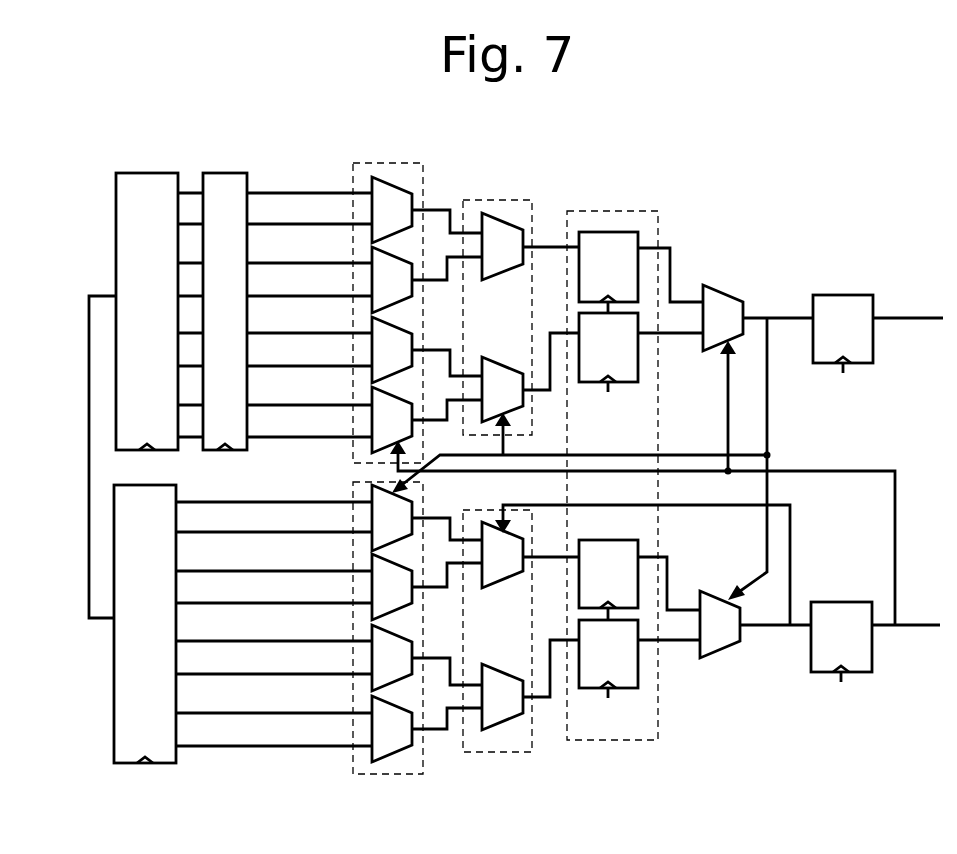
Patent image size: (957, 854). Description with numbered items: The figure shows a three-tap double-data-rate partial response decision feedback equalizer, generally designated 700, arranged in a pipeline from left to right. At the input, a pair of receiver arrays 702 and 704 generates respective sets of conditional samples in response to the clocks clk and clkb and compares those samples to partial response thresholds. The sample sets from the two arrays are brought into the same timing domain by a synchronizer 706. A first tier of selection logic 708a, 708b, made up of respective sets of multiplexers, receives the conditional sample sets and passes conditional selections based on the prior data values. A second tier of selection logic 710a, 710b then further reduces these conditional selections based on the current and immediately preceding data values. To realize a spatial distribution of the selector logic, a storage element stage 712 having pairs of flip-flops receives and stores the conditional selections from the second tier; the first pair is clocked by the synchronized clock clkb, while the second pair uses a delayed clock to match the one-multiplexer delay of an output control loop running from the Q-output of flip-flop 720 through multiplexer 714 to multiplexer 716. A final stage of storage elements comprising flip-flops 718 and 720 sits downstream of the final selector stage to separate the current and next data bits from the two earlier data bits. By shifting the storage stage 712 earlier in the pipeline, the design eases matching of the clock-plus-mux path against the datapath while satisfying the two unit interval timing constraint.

The 3-tap DDR PrDFE 700 is at (840, 178).
The receiver array 702 is at (116, 210).
The receiver array 704 is at (113, 707).
The synchronizer 706 is at (250, 183).
The first tier of selection logic 708a is at (425, 178).
The first tier of selection logic 708b is at (392, 778).
The second tier of selection logic 710a is at (532, 210).
The second tier of selection logic 710b is at (500, 755).
The storage element stage 712 is at (665, 226).
The multiplexer 714 is at (728, 291).
The multiplexer 716 is at (728, 652).
The flip-flop 718 is at (848, 295).
The flip-flop 720 is at (843, 602).